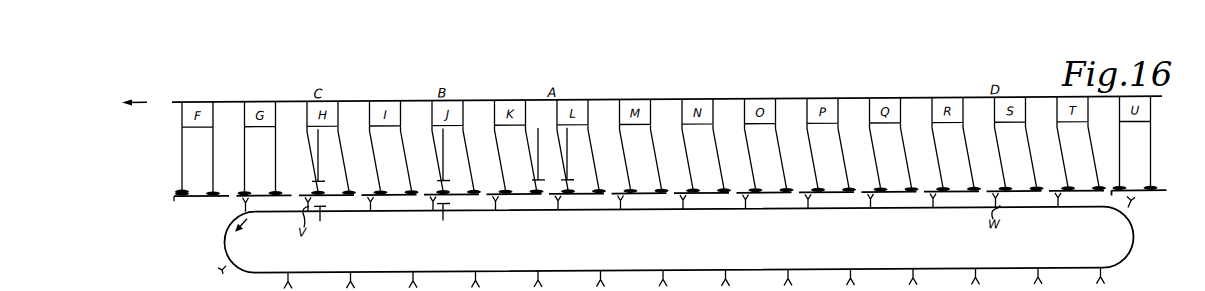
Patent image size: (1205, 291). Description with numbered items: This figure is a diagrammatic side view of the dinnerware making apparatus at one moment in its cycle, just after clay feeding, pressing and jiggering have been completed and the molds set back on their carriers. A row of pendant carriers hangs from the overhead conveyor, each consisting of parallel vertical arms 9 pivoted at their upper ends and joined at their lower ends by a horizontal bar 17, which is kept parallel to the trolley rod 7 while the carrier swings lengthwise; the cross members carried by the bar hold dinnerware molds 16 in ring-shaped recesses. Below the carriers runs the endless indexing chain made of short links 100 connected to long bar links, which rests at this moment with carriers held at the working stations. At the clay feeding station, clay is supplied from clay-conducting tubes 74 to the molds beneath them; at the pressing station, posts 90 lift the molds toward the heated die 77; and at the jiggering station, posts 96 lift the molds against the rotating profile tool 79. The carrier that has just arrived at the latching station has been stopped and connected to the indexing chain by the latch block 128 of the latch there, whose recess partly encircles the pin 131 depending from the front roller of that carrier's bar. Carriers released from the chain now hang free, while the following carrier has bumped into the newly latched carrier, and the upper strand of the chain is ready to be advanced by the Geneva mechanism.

The vertical arms 9 is at (183, 149).
The rod 7 is at (160, 155).
The dinnerware molds 16 is at (183, 193).
The pin 131 is at (174, 198).
The horizontal bar 17 is at (200, 198).
The profile tool 79 is at (319, 182).
The heated die 77 is at (444, 182).
The clay-conducting tubes 74 is at (567, 147).
The posts 96 is at (320, 222).
The posts 90 is at (443, 222).
The short links 100 is at (703, 215).
The latch block 128 is at (1000, 202).